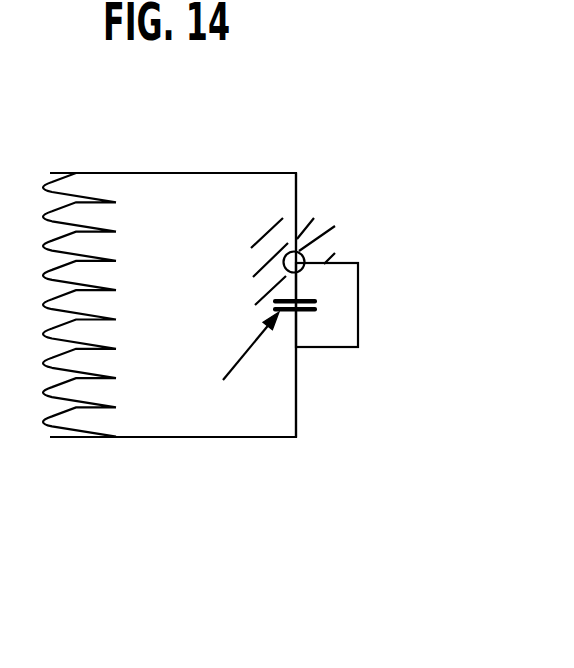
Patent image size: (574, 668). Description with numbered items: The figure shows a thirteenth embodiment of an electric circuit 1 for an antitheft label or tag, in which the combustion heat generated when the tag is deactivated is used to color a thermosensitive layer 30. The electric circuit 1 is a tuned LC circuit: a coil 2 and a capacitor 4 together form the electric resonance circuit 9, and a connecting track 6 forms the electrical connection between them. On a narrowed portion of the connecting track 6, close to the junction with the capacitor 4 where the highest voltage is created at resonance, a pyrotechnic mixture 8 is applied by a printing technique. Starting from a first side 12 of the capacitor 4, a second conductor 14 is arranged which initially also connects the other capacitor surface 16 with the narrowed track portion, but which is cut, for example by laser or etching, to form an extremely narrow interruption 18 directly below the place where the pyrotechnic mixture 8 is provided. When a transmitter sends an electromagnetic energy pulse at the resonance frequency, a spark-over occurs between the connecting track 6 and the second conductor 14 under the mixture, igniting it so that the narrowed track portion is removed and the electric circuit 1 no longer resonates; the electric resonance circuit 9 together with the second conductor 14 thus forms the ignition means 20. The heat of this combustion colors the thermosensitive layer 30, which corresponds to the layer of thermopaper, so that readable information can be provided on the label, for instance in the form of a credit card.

The electric circuit 1 is at (423, 505).
The coil 2 is at (118, 380).
The capacitor 4 is at (238, 364).
The connecting track 6 is at (297, 188).
The pyrotechnic mixture 8 is at (285, 257).
The electric resonance circuit 9 is at (150, 423).
The first side of the capacitor 12 is at (300, 313).
The second conductor 14 is at (358, 330).
The other capacitor surface 16 is at (330, 292).
The interruption 18 is at (297, 235).
The ignition means 20 is at (238, 425).
The thermosensitive layer 30 is at (289, 252).